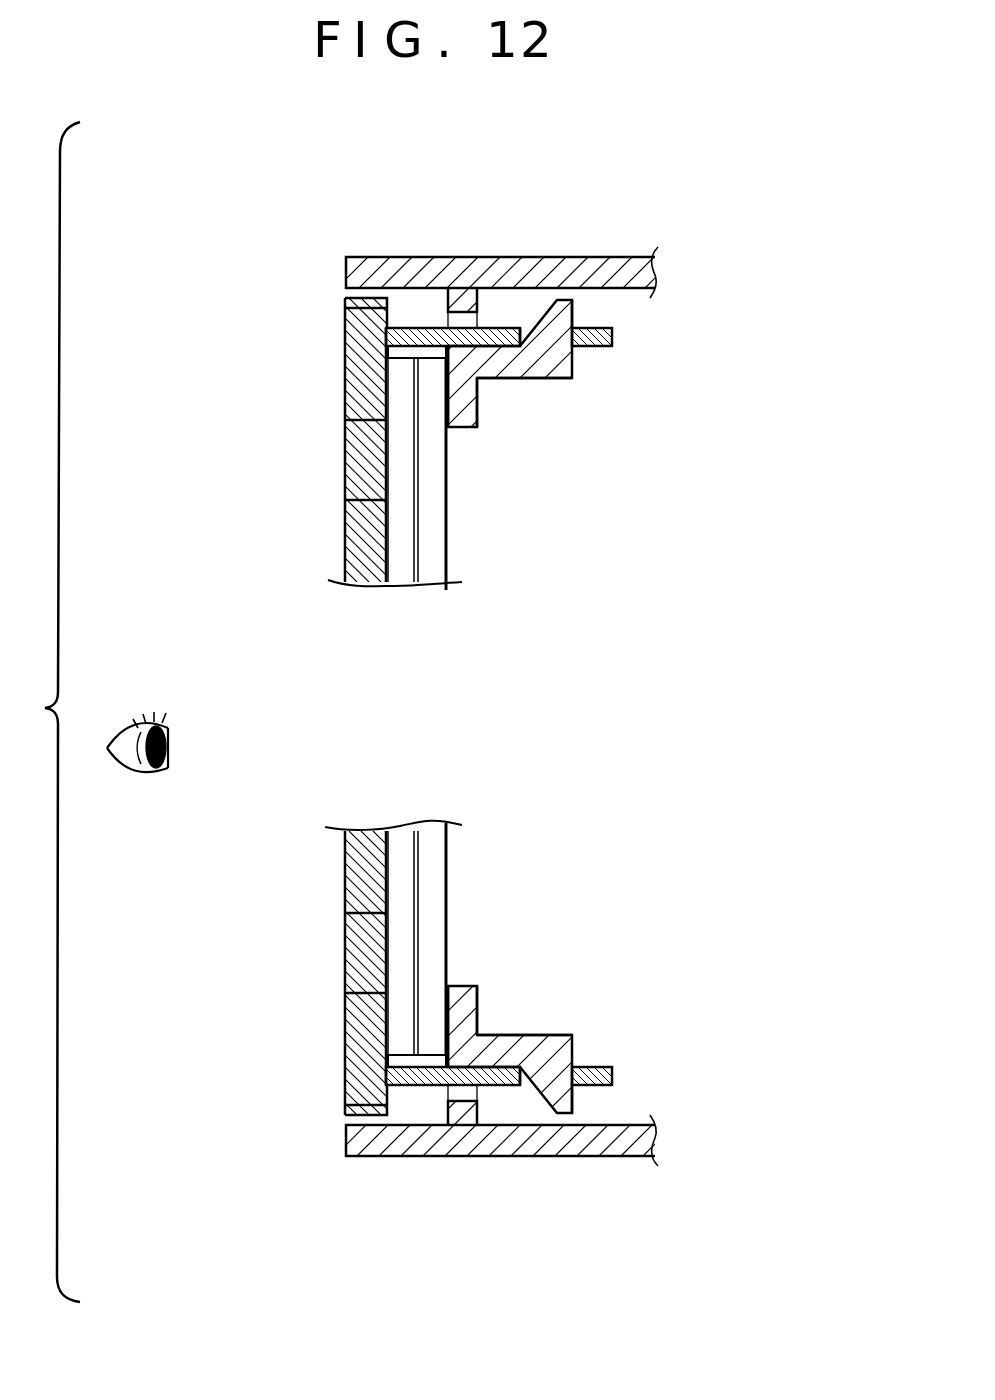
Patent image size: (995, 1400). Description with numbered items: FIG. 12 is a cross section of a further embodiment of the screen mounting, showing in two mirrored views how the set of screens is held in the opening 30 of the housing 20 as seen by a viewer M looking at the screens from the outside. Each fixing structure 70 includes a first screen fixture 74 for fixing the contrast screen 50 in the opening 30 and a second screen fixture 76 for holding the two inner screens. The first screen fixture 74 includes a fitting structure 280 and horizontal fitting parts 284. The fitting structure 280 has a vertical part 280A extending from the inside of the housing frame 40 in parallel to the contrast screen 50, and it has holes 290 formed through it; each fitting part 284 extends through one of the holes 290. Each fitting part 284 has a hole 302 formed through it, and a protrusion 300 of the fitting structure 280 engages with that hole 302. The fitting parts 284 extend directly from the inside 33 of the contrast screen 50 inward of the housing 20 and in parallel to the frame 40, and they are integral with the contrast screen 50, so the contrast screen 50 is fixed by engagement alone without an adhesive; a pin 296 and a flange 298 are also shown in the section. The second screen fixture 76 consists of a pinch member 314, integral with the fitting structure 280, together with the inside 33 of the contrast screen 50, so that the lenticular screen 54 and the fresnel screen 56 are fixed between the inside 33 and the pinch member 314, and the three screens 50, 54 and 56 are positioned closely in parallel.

The housing 20 is at (494, 708).
The opening 30 is at (365, 707).
The inside of the contrast screen 33 is at (345, 419).
The housing frame 40 is at (497, 257).
The contrast screen 50 is at (365, 500).
The lenticular screen 54 is at (397, 565).
The fresnel screen 56 is at (425, 568).
The fixing structure 70 is at (560, 705).
The first screen fixture 74 is at (515, 705).
The second screen fixture 76 is at (485, 380).
The fitting structure 280 is at (499, 305).
The vertical part 280A is at (461, 312).
The fitting part 284 is at (610, 380).
The hole 290 is at (440, 324).
The pin 296 is at (613, 338).
The flange 298 is at (345, 308).
The protrusion 300 is at (580, 306).
The hole 302 is at (527, 343).
The pinch member 314 is at (460, 432).
The observer M is at (138, 770).